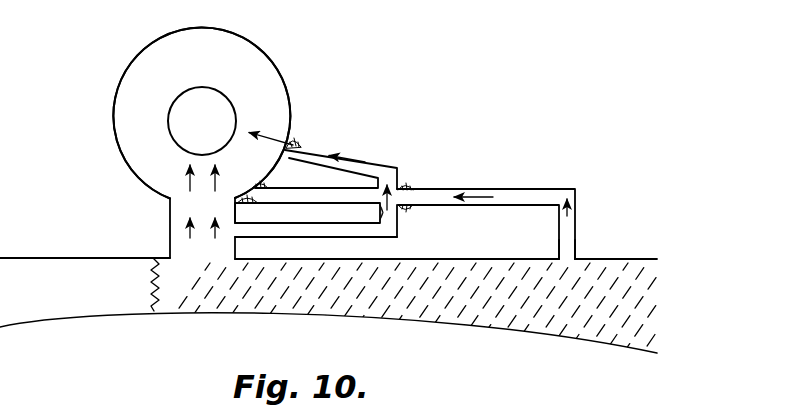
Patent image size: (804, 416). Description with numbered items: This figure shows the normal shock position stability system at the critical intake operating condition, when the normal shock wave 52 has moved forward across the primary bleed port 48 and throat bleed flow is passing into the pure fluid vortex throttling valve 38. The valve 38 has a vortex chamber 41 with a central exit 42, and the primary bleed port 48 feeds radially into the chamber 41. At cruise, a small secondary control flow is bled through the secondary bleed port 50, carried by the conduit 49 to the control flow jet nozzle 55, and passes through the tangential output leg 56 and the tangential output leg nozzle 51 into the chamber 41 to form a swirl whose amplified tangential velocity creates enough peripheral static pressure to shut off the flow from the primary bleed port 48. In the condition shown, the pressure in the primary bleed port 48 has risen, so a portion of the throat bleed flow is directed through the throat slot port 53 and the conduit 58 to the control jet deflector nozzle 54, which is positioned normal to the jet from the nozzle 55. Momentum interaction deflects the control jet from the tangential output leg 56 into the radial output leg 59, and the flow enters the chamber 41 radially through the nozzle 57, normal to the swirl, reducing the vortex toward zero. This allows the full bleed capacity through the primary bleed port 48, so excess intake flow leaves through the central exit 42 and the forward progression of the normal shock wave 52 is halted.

The pure fluid vortex throttling valve 38 is at (296, 67).
The vortex chamber 41 is at (130, 99).
The central exit 42 is at (217, 130).
The primary bleed port 48 is at (197, 252).
The conduit 49 is at (519, 190).
The secondary bleed port 50 is at (568, 265).
The tangential output leg nozzle 51 is at (272, 188).
The normal shock wave 52 is at (146, 286).
The throat slot port 53 is at (242, 228).
The control jet deflector nozzle 54 is at (401, 212).
The control flow jet nozzle 55 is at (413, 190).
The tangential output leg 56 is at (303, 202).
The radial nozzle 57 is at (303, 146).
The conduit 58 is at (336, 233).
The radial output leg 59 is at (366, 163).